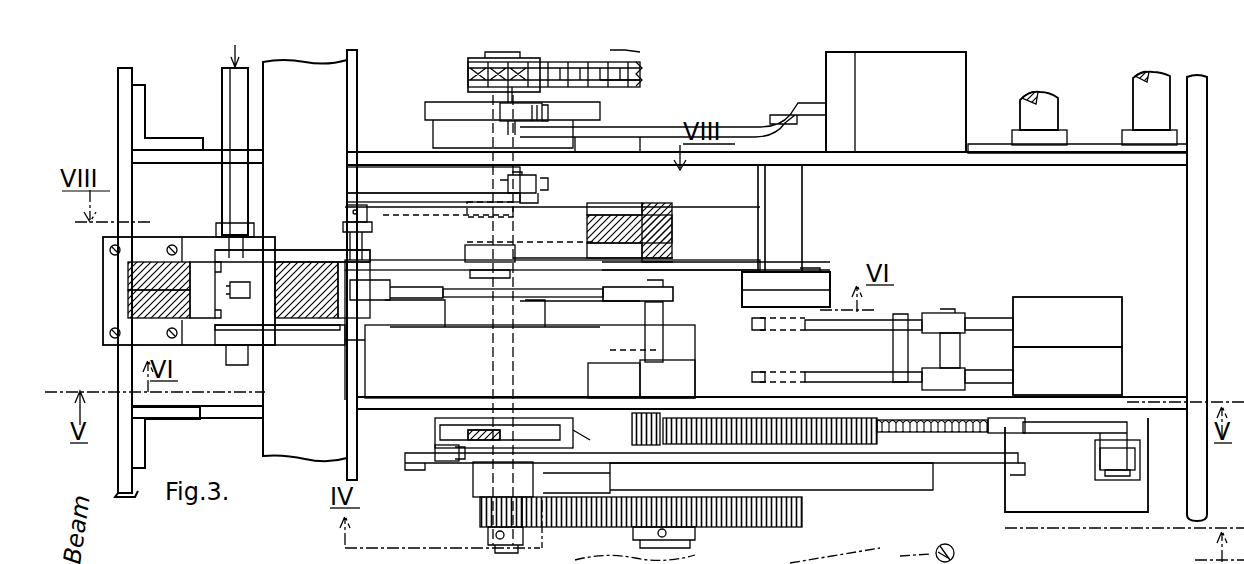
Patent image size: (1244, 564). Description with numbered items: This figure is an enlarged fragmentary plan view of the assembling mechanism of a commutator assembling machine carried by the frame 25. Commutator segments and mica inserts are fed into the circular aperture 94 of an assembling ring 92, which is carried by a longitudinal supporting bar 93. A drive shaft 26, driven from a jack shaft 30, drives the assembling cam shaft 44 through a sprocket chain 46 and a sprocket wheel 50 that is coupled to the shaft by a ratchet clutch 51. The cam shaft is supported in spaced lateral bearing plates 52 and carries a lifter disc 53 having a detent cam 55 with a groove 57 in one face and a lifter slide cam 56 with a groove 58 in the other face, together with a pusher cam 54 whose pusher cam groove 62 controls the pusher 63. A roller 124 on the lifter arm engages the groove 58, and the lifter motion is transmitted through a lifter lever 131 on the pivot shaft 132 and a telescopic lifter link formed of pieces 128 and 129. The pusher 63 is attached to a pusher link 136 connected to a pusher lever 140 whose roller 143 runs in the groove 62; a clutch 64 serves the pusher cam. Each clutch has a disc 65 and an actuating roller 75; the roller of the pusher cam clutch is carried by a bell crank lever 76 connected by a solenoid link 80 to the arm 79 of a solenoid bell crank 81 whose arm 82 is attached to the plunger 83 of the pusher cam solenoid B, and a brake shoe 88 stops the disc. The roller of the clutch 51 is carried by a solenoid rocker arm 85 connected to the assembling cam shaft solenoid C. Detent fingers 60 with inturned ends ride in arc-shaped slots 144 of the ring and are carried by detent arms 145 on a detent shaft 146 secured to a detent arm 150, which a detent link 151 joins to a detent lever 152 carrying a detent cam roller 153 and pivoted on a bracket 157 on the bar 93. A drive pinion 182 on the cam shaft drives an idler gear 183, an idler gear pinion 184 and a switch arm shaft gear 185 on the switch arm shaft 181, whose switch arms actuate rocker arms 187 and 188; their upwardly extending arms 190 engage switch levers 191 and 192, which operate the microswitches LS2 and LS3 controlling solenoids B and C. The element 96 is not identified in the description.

The vertical bar 96 is at (222, 100).
The supporting bar 93 is at (315, 446).
The frame 25 is at (1197, 210).
The lateral bearing plates 52 is at (1080, 165).
The assembling cam shaft 44 is at (512, 60).
The sprocket wheel 50 is at (470, 62).
The sprocket chain 46 is at (612, 90).
The actuating roller 75 is at (500, 112).
The ratchet clutch 51 is at (554, 117).
The solenoid rocker arm 85 is at (770, 112).
The assembling cam shaft solenoid C is at (972, 80).
The drive shaft 26 is at (1048, 108).
The jack shaft 30 is at (1133, 100).
The detent arm 150 is at (392, 193).
The detent lever 152 is at (470, 193).
The detent link 151 is at (540, 182).
The detent shaft 146 is at (367, 215).
The detent cam roller 153 is at (470, 217).
The detent cam 55 is at (620, 210).
The groove 57 is at (640, 208).
The lifter disc 53 is at (681, 230).
The lifter slide cam 56 is at (590, 250).
The groove 58 is at (660, 250).
The lifter link piece 129 is at (732, 270).
The pivot shaft 132 is at (795, 215).
The lifter lever 131 is at (818, 297).
The bracket 157 is at (380, 312).
The roller 124 is at (500, 270).
The lifter link piece 128 is at (523, 279).
The pusher link 136 is at (605, 300).
The pusher cam 54 is at (676, 334).
The roller 143 is at (612, 353).
The pusher cam groove 62 is at (520, 335).
The clutch 64 is at (580, 430).
The pusher lever 140 is at (690, 388).
The idler gear pinion 184 is at (665, 415).
The switch arm shaft gear 185 is at (878, 438).
The brake shoe 88 is at (502, 433).
The disc 65 is at (589, 444).
The bell crank lever 76 is at (412, 468).
The drive pinion 182 is at (482, 518).
The idler gear 183 is at (802, 527).
The solenoid link 80 is at (968, 455).
The arm 79 is at (1012, 420).
The solenoid bell crank 81 is at (1030, 446).
The arm 82 is at (1075, 428).
The plunger 83 is at (1125, 460).
The pusher cam solenoid B is at (1135, 500).
The switch lever 192 is at (935, 313).
The rocker arm 188 is at (830, 325).
The rocker arm 187 is at (870, 380).
The arm 190 is at (920, 325).
The switch lever 191 is at (950, 372).
The switch arm shaft 181 is at (752, 352).
The microswitch LS3 is at (1122, 320).
The microswitch LS2 is at (1122, 365).
The arc-shaped slots 144 is at (189, 290).
The circular aperture 94 is at (160, 300).
The assembling ring 92 is at (128, 303).
The detent fingers 60 is at (215, 262).
The detent arms 145 is at (298, 262).
The pusher 63 is at (238, 300).